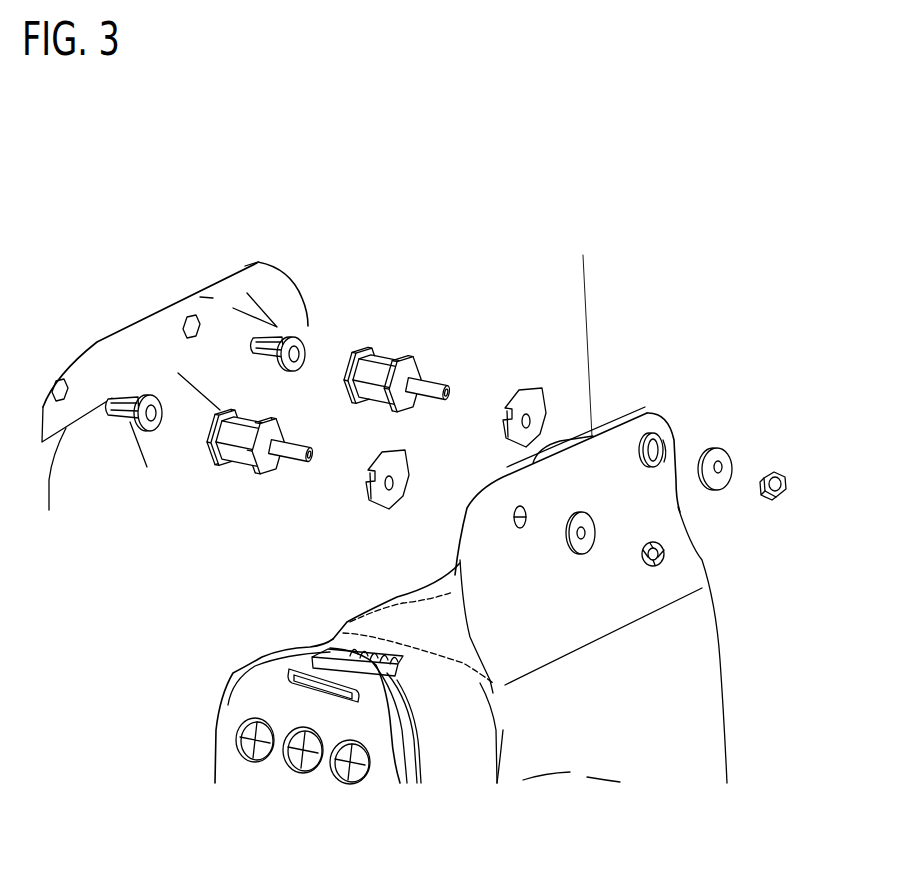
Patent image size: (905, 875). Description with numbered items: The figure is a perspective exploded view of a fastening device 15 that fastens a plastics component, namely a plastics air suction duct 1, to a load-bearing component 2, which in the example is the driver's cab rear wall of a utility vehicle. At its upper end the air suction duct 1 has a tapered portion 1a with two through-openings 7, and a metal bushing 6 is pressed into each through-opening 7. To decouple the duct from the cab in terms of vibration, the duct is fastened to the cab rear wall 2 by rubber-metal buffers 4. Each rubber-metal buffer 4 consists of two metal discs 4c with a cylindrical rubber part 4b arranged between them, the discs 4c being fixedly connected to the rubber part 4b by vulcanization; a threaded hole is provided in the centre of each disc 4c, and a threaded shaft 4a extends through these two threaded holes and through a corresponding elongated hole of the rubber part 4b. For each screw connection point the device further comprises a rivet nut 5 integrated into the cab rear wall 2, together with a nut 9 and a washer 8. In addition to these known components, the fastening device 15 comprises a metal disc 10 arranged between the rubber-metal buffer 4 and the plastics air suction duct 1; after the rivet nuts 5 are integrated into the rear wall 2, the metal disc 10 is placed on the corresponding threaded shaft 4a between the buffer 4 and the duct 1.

The plastics air suction duct 1 is at (567, 695).
The tapered portion 1a is at (610, 502).
The load-bearing component 2 is at (126, 343).
The rubber-metal buffer 4 is at (388, 328).
The threaded shaft 4a is at (378, 348).
The rubber part 4b is at (378, 397).
The metal disc 4c is at (386, 348).
The rivet nut 5 is at (280, 337).
The metal bushing 6 is at (653, 440).
The through-opening 7 is at (650, 448).
The washer 8 is at (717, 447).
The nut 9 is at (775, 473).
The metal disc 10 is at (522, 407).
The fastening device 15 is at (438, 53).